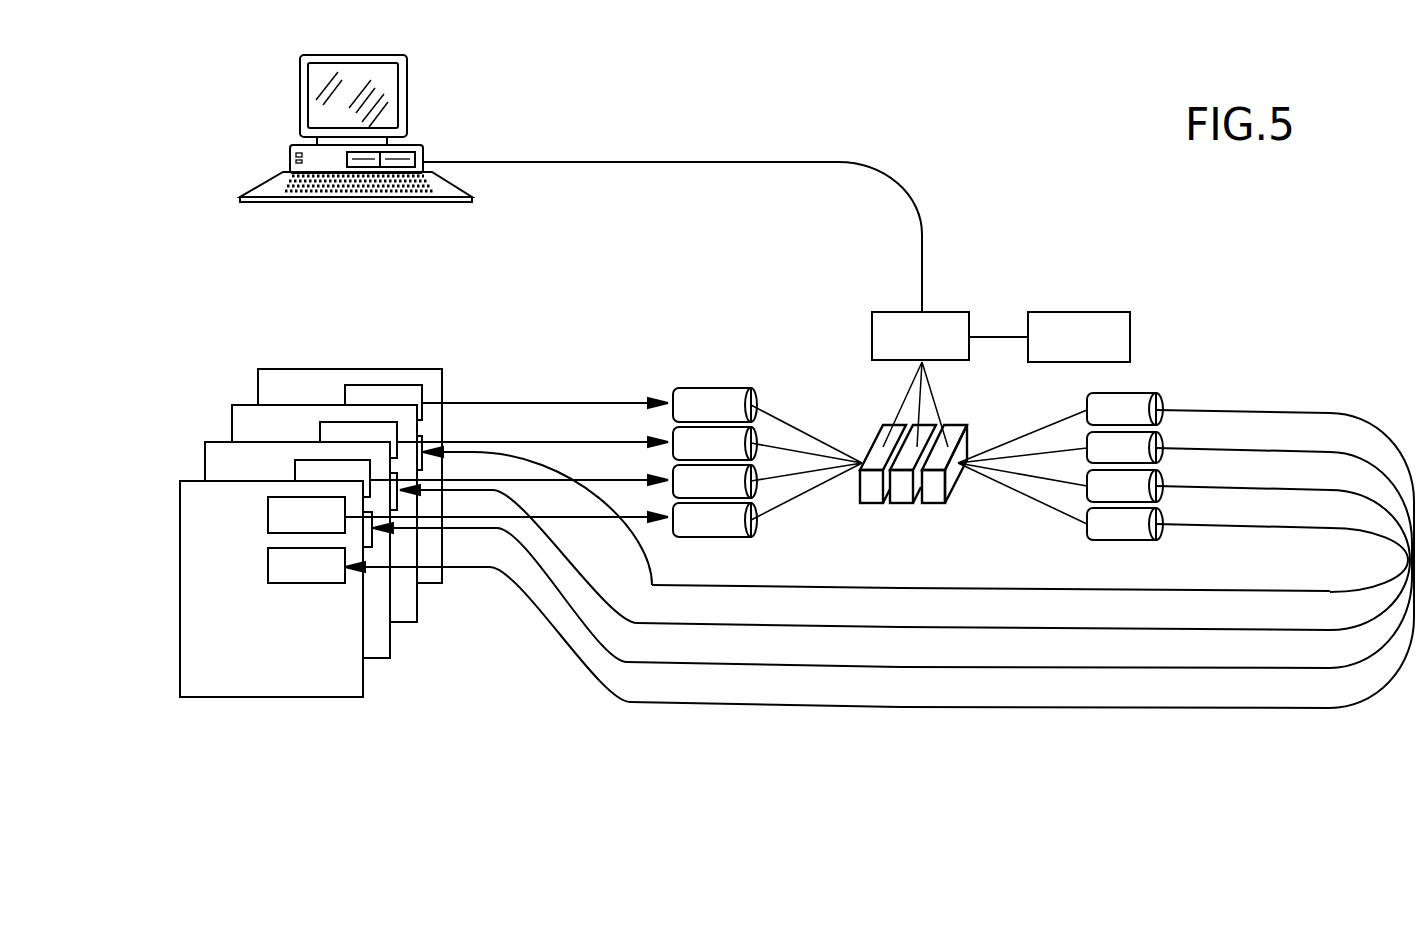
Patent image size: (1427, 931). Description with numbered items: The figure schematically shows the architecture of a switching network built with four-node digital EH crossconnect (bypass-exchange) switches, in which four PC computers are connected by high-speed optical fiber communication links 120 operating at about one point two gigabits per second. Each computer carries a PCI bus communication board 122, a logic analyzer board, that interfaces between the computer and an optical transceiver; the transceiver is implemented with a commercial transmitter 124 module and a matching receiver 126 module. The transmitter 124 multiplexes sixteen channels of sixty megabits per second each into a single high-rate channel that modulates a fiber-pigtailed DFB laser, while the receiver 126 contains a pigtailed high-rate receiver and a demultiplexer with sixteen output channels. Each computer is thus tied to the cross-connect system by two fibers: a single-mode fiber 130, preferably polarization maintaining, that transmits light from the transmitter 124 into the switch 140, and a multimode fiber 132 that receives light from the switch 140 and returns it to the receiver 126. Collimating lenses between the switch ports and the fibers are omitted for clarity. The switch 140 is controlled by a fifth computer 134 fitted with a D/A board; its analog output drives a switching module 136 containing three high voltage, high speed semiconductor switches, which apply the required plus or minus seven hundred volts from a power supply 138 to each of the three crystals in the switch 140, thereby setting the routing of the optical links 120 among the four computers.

The optical fiber communication links 120 is at (972, 762).
The PCI bus communication board 122 is at (365, 680).
The transmitter 124 is at (268, 523).
The receiver 126 is at (268, 563).
The single-mode fiber 130 is at (570, 402).
The multimode fiber 132 is at (543, 627).
The fifth computer 134 is at (408, 100).
The switching module 136 is at (872, 340).
The power supply 138 is at (1130, 343).
The switch 140 is at (953, 517).